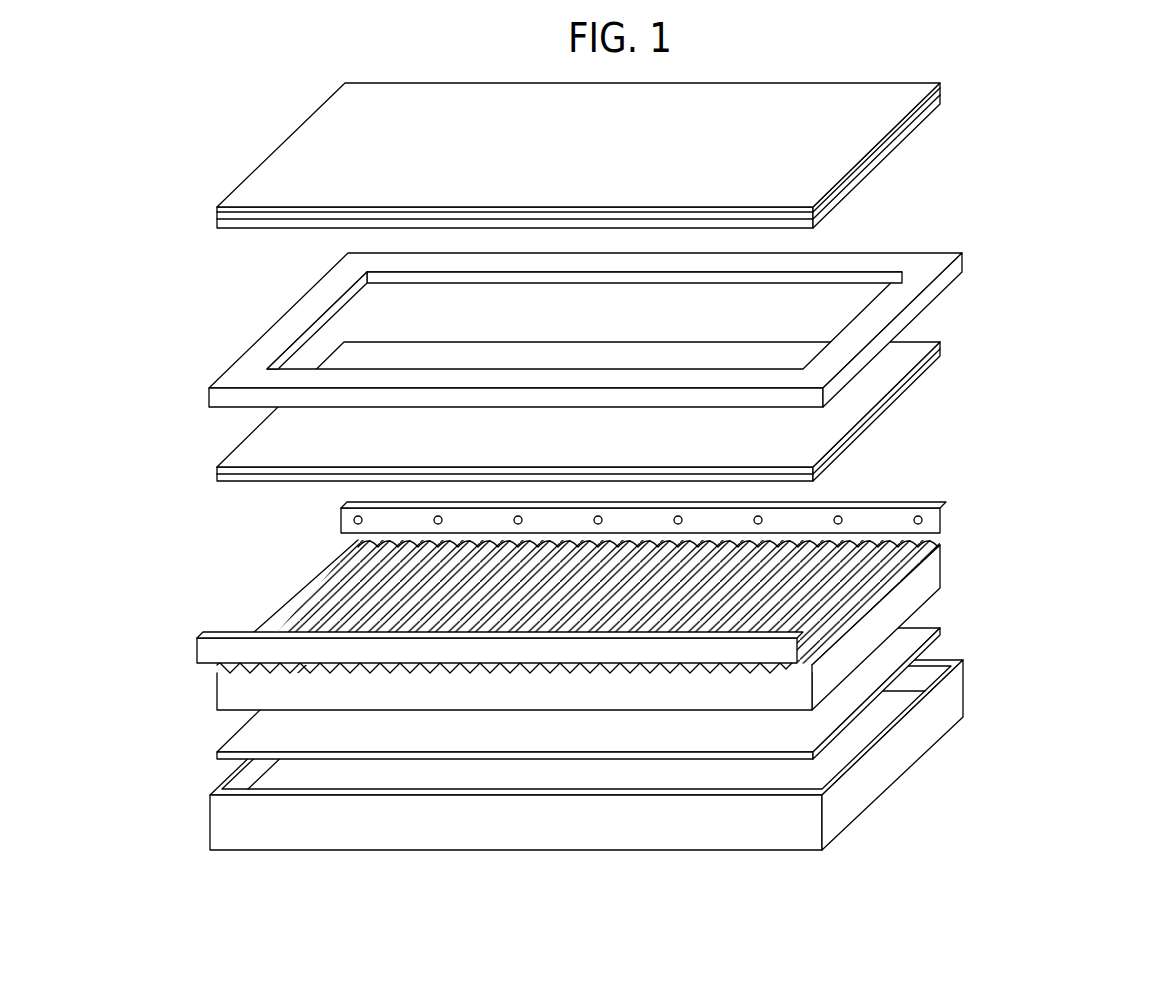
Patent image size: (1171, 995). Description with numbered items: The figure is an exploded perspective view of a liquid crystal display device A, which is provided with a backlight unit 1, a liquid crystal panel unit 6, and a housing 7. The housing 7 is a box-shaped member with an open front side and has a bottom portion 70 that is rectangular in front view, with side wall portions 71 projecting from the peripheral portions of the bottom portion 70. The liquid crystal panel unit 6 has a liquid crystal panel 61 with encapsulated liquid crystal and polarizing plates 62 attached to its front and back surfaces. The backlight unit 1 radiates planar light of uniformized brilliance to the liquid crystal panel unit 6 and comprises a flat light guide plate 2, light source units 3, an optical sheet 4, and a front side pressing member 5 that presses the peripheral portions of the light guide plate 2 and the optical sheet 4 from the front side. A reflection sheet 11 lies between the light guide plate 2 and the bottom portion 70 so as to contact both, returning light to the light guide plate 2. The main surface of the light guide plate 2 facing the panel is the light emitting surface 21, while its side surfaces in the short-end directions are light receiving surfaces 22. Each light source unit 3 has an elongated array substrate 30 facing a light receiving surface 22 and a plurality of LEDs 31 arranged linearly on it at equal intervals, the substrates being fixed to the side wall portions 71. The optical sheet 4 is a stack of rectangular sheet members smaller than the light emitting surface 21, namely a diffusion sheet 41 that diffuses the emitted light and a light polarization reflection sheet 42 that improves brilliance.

The liquid crystal display device A is at (218, 124).
The backlight unit 1 is at (1108, 243).
The light guide plate 2 is at (598, 621).
The light emitting surface 21 is at (334, 592).
The light receiving surfaces 22 is at (948, 556).
The light source units 3 is at (568, 584).
The array substrates 30 is at (346, 516).
The LEDs 31 is at (433, 521).
The optical sheet 4 is at (632, 406).
The diffusion sheet 41 is at (942, 357).
The light polarization reflection sheet 42 is at (940, 343).
The front side pressing member 5 is at (955, 278).
The liquid crystal panel unit 6 is at (613, 155).
The liquid crystal panel 61 is at (905, 128).
The polarizing plates 62 is at (214, 228).
The housing 7 is at (605, 769).
The bottom portion 70 is at (848, 744).
The side wall portions 71 is at (777, 827).
The reflection sheet 11 is at (273, 730).